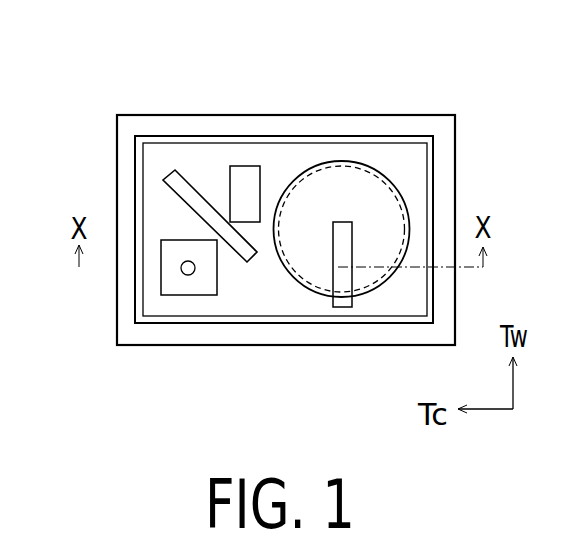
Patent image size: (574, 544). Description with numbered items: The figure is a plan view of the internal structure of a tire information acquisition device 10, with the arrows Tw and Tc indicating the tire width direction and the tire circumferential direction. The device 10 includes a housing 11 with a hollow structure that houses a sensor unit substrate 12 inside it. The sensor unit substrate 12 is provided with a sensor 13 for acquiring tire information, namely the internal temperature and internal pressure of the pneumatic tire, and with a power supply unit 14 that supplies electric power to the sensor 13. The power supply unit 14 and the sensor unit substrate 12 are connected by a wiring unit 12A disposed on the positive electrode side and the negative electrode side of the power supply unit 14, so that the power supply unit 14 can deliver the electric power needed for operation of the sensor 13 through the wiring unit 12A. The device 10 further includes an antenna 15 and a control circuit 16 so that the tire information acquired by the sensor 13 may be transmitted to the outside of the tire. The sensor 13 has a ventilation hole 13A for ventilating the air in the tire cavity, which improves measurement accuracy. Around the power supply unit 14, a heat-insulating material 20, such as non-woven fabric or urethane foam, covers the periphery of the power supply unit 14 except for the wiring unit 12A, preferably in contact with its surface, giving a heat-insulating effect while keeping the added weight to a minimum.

The tire information acquisition device 10 is at (434, 112).
The housing 11 is at (127, 162).
The sensor unit substrate 12 is at (413, 165).
The wiring unit 12A is at (345, 300).
The sensor 13 is at (200, 272).
The ventilation hole 13A is at (188, 276).
The power supply unit 14 is at (303, 193).
The antenna 15 is at (195, 200).
The control circuit 16 is at (242, 180).
The heat-insulating material 20 is at (352, 163).